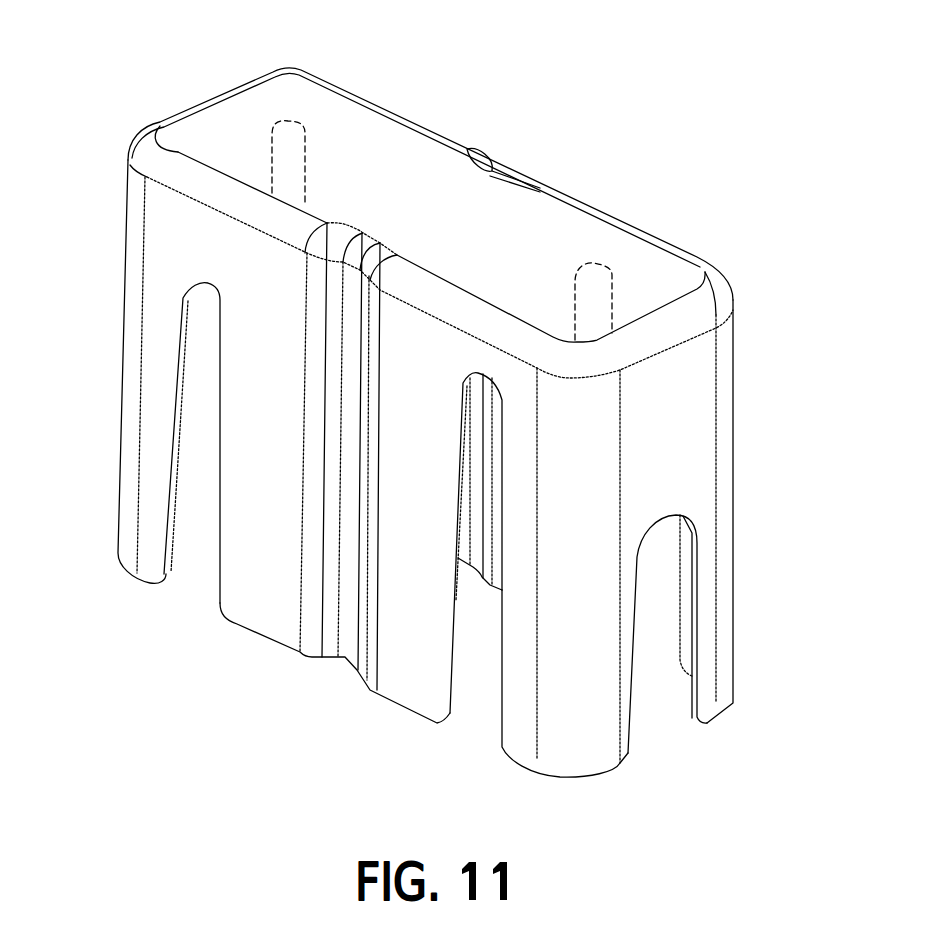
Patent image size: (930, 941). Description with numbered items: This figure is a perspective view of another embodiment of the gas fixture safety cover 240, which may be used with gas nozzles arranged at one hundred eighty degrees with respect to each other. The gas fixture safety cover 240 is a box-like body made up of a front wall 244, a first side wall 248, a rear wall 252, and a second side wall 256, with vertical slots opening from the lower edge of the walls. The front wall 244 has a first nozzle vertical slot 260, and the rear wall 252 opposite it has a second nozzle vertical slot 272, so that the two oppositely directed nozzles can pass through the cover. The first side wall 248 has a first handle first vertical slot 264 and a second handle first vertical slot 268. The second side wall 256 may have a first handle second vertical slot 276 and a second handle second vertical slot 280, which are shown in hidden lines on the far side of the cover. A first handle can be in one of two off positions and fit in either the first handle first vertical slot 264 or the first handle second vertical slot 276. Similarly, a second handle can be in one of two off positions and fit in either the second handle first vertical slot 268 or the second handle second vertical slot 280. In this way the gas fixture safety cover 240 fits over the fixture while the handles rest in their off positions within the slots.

The gas fixture safety cover 240 is at (563, 94).
The front wall 244 is at (687, 397).
The first side wall 248 is at (419, 345).
The rear wall 252 is at (200, 102).
The second side wall 256 is at (566, 194).
The first nozzle vertical slot 260 is at (660, 710).
The first handle first vertical slot 264 is at (481, 715).
The second handle first vertical slot 268 is at (192, 580).
The second nozzle vertical slot 272 is at (203, 318).
The first handle second vertical slot 276 is at (613, 280).
The second handle second vertical slot 280 is at (292, 104).